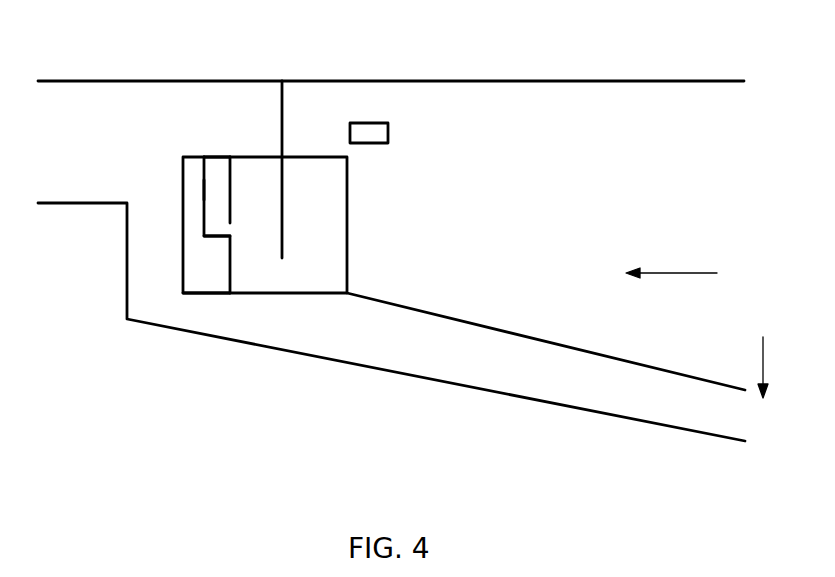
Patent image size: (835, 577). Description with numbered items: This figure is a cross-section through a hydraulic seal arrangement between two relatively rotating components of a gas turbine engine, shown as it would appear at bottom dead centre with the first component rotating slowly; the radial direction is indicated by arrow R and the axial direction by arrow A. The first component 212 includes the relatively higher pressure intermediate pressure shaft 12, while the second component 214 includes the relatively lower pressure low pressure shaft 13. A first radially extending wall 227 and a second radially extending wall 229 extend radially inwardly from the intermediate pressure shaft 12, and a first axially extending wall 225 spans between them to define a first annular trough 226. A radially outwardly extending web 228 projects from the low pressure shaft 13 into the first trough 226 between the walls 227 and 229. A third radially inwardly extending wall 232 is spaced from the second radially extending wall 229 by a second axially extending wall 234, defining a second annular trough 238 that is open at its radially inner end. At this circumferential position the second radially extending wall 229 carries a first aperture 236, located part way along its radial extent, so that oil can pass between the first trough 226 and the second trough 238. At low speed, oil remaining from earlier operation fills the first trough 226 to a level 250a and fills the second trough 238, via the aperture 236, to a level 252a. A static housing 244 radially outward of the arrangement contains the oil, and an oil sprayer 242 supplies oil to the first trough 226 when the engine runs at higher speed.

The intermediate pressure shaft 12 is at (530, 338).
The low pressure shaft 13 is at (515, 80).
The first component 212 is at (418, 294).
The second component 214 is at (547, 100).
The first axially extending wall 225 is at (316, 295).
The first annular trough 226 is at (262, 256).
The first radially extending wall 227 is at (348, 245).
The radially outwardly extending web 228 is at (285, 136).
The second radially extending wall 229 is at (223, 265).
The third radially inwardly extending wall 232 is at (203, 198).
The second axially extending wall 234 is at (197, 237).
The first aperture 236 is at (230, 219).
The second annular trough 238 is at (216, 190).
The oil sprayer 242 is at (389, 132).
The housing 244 is at (335, 362).
The oil level in first trough 250a is at (262, 157).
The oil level in second trough 252a is at (220, 157).
The axial direction arrow A is at (681, 274).
The radial direction arrow R is at (765, 353).